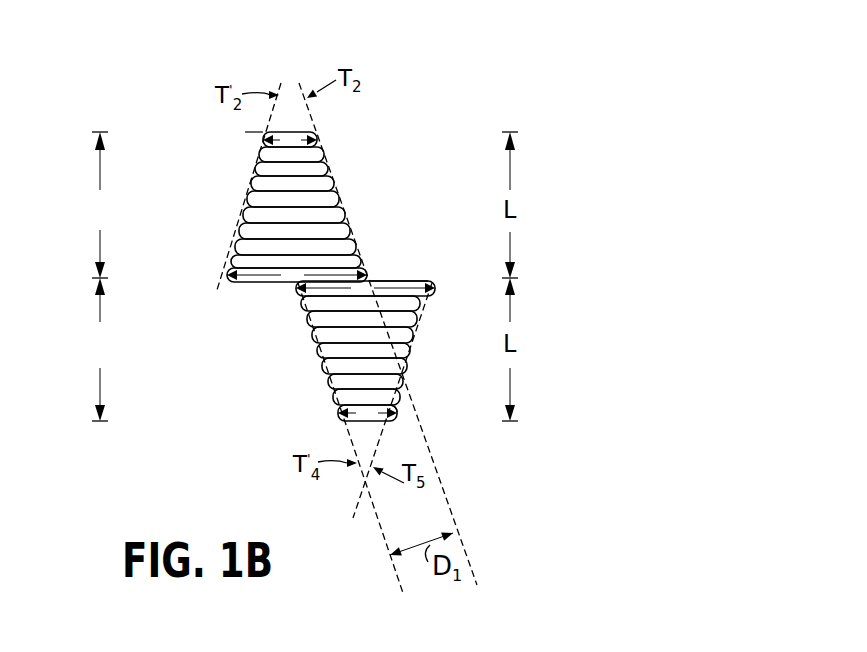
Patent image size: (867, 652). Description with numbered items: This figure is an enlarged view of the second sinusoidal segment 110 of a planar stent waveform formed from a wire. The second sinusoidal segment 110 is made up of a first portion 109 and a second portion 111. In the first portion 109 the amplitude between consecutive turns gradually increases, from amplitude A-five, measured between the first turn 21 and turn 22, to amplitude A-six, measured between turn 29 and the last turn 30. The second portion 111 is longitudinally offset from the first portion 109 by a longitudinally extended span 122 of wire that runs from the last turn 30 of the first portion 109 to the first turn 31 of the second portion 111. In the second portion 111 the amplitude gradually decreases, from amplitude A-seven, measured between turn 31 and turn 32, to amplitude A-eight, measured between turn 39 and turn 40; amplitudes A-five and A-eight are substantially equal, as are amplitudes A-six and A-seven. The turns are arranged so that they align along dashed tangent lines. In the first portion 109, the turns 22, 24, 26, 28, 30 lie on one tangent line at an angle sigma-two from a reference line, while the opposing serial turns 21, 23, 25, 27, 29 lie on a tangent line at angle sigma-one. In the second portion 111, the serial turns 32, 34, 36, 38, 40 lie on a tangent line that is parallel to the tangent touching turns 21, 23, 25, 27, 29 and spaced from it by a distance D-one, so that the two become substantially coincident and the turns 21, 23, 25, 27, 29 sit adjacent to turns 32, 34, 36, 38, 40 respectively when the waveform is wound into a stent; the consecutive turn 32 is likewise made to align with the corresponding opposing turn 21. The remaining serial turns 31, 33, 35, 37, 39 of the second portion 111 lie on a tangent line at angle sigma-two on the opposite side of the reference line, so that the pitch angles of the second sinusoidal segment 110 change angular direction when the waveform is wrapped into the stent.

The first turn 21 is at (318, 133).
The turn 22 is at (257, 155).
The turn 23 is at (328, 166).
The turn 24 is at (250, 183).
The turn 25 is at (338, 196).
The turn 26 is at (242, 216).
The turn 27 is at (349, 225).
The turn 28 is at (233, 248).
The turn 29 is at (360, 257).
The last turn 30 is at (224, 275).
The first turn 31 is at (437, 287).
The turn 32 is at (302, 303).
The turn 33 is at (418, 320).
The turn 34 is at (313, 338).
The turn 35 is at (412, 350).
The turn 36 is at (323, 362).
The turn 37 is at (401, 375).
The turn 38 is at (333, 396).
The turn 39 is at (416, 405).
The turn 40 is at (338, 415).
The first portion 109 is at (102, 205).
The second sinusoidal segment 110 is at (596, 200).
The second portion 111 is at (102, 349).
The longitudinally extended span 122 is at (405, 281).